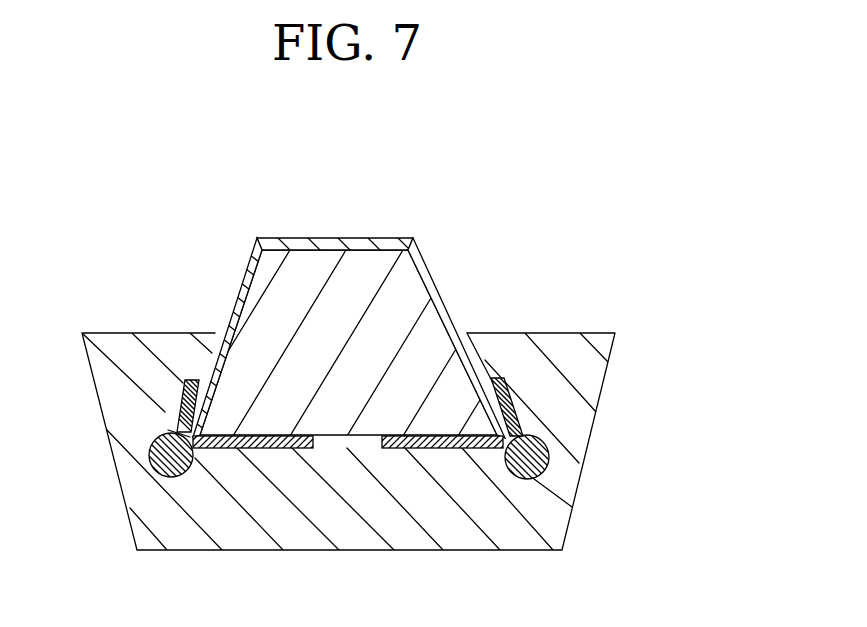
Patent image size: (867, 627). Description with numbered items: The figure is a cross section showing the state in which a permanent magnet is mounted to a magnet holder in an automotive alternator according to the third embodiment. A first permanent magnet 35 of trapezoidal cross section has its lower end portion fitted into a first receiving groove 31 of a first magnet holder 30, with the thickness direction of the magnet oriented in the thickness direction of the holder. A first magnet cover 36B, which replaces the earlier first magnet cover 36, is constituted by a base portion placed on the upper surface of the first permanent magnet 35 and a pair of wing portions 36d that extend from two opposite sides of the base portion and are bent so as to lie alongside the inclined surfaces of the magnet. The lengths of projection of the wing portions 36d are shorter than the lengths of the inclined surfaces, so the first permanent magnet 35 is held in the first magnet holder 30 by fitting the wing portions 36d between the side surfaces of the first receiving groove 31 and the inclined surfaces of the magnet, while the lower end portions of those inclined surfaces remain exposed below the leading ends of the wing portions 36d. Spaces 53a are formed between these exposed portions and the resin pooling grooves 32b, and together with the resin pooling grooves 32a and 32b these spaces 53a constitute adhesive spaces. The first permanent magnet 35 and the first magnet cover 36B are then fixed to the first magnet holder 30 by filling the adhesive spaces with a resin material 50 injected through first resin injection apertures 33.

The first magnet holder 30 is at (606, 329).
The first receiving groove 31 is at (482, 358).
The resin pooling groove 32a is at (252, 448).
The resin pooling groove 32b is at (177, 412).
The first resin injection aperture 33 is at (152, 463).
The first permanent magnet 35 is at (287, 287).
The first magnet cover 36 is at (370, 294).
The first magnet cover 36B is at (359, 231).
The wing portions 36d is at (433, 281).
The resin material 50 is at (548, 452).
The spaces 53a is at (168, 430).